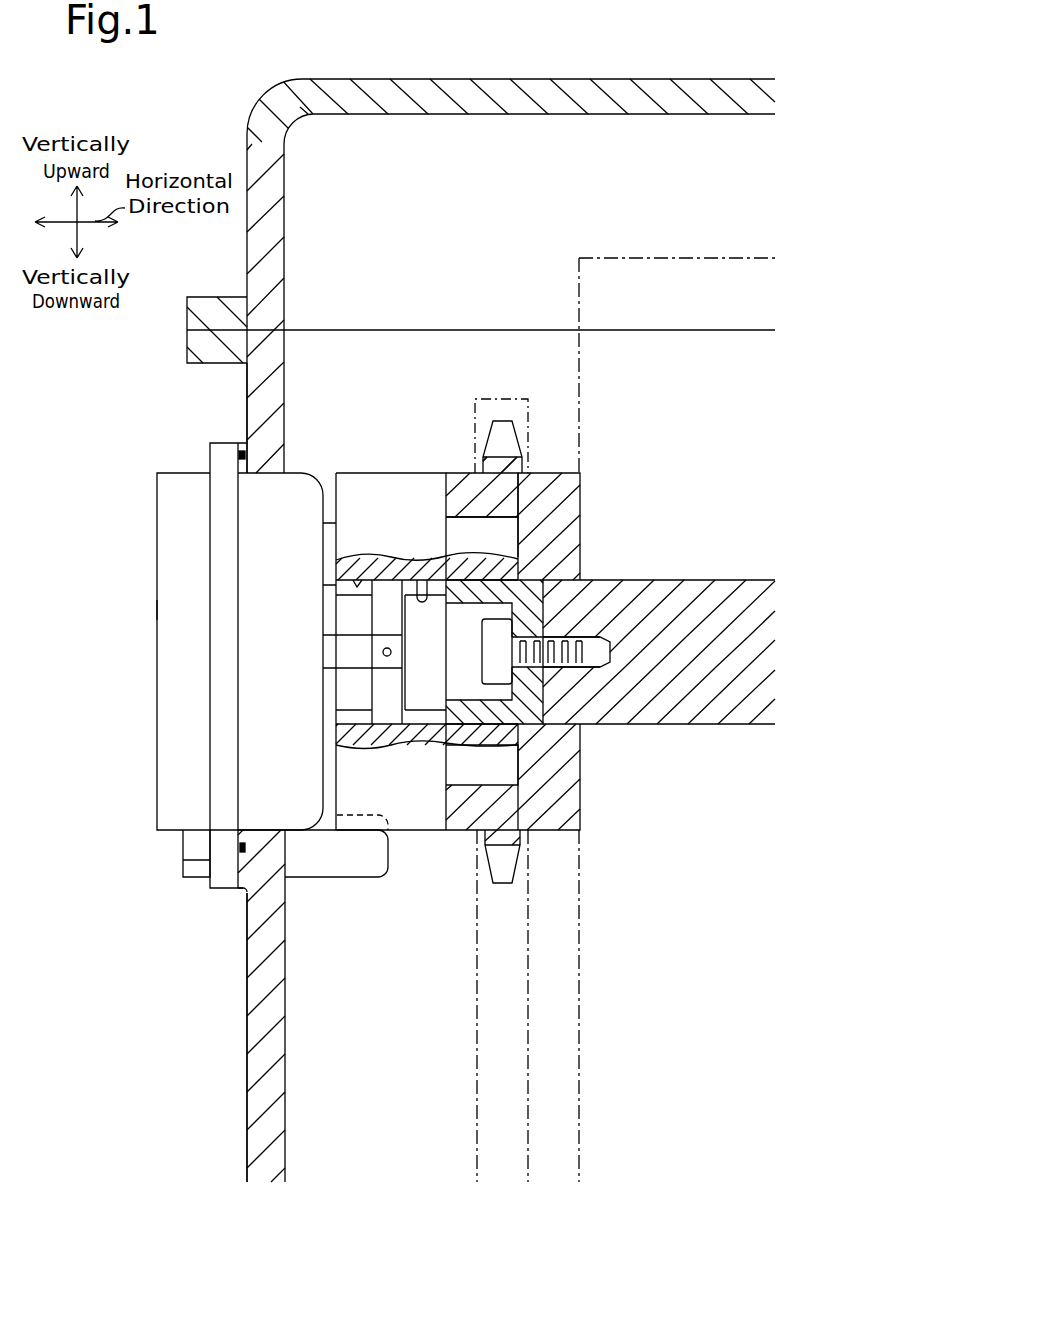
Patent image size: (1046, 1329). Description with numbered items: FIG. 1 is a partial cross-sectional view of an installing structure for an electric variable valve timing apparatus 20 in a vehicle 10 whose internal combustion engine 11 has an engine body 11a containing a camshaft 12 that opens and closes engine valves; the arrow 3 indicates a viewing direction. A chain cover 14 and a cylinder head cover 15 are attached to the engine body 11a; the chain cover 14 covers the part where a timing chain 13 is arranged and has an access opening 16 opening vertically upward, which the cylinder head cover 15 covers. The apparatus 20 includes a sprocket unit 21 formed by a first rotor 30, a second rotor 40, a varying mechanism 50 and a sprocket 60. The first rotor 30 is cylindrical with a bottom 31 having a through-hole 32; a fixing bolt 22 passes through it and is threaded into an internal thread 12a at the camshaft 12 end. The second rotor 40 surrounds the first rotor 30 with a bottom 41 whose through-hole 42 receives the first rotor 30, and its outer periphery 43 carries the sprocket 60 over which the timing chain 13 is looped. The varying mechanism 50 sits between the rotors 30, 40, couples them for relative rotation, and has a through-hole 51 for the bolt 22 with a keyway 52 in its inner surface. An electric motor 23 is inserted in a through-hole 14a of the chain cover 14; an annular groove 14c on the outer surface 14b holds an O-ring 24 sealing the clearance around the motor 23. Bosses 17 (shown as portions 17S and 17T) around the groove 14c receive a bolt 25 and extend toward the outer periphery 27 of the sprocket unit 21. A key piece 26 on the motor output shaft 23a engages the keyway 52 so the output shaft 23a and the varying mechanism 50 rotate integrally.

The viewing direction arrow 3 is at (100, 567).
The vehicle 10 is at (181, 92).
The internal combustion engine 11 is at (436, 609).
The engine body 11a is at (665, 258).
The camshaft 12 is at (665, 580).
The internal thread 12a is at (590, 637).
The timing chain 13 is at (477, 1053).
The chain cover 14 is at (284, 386).
The through-hole 14a is at (262, 823).
The outer surface 14b is at (247, 388).
The annular groove 14c is at (239, 455).
The cylinder head cover 15 is at (528, 79).
The access opening 16 is at (293, 343).
The boss 17 is at (329, 700).
The seal side portion 17S is at (323, 522).
The seal tab portion 17T is at (352, 877).
The electric variable valve timing apparatus 20 is at (393, 346).
The sprocket unit 21 is at (418, 388).
The fixing bolt 22 is at (575, 667).
The electric motor 23 is at (157, 655).
The output shaft 23a is at (345, 670).
The O-ring 24 is at (236, 452).
The bolt 25 is at (185, 877).
The key piece 26 is at (380, 745).
The outer periphery 27 is at (343, 473).
The first rotor 30 is at (533, 578).
The bottom 31 is at (474, 605).
The through-hole 32 is at (507, 650).
The second rotor 40 is at (551, 473).
The bottom 41 is at (518, 766).
The through-hole 42 is at (560, 724).
The outer periphery 43 is at (455, 473).
The varying mechanism 50 is at (388, 473).
The through-hole 51 is at (417, 603).
The keyway 52 is at (358, 585).
The sprocket 60 is at (500, 421).